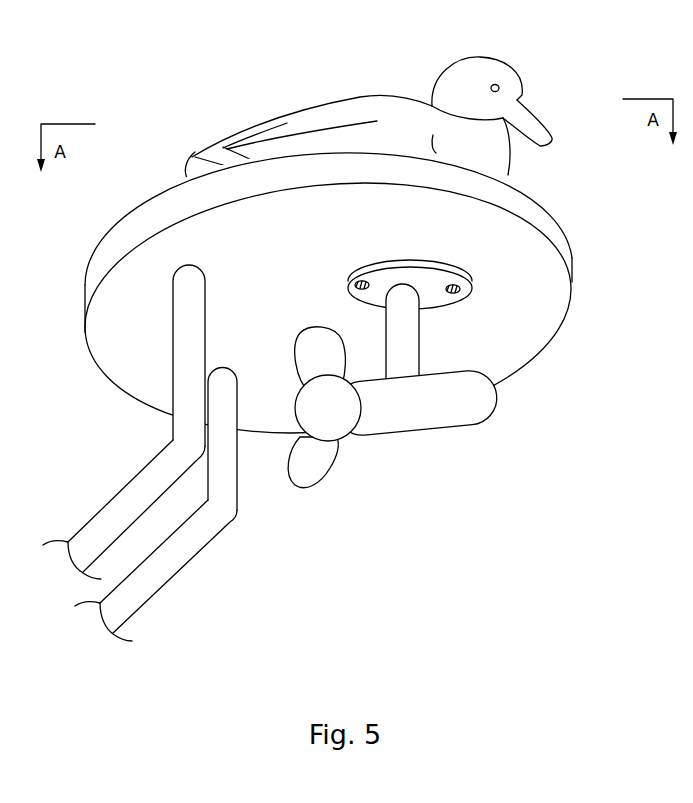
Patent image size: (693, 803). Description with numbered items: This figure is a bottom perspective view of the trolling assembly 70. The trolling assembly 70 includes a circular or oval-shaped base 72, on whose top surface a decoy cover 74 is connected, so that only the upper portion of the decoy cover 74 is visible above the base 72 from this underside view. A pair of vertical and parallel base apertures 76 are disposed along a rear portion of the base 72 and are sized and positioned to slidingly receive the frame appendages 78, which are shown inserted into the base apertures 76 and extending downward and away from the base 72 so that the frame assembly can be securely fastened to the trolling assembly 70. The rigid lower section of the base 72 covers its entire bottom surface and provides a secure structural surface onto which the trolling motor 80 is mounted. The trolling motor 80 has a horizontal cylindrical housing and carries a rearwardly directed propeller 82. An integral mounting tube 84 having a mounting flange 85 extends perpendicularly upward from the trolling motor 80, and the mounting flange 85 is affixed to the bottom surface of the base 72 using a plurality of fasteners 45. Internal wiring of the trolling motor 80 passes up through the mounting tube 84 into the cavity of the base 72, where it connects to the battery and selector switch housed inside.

The trolling assembly 70 is at (342, 326).
The base 72 is at (566, 333).
The decoy cover 74 is at (330, 128).
The base apertures 76 is at (165, 453).
The frame appendages 78 is at (177, 542).
The trolling motor 80 is at (432, 435).
The propeller 82 is at (305, 467).
The mounting tube 84 is at (420, 338).
The mounting flange 85 is at (472, 293).
The fasteners 45 is at (462, 289).